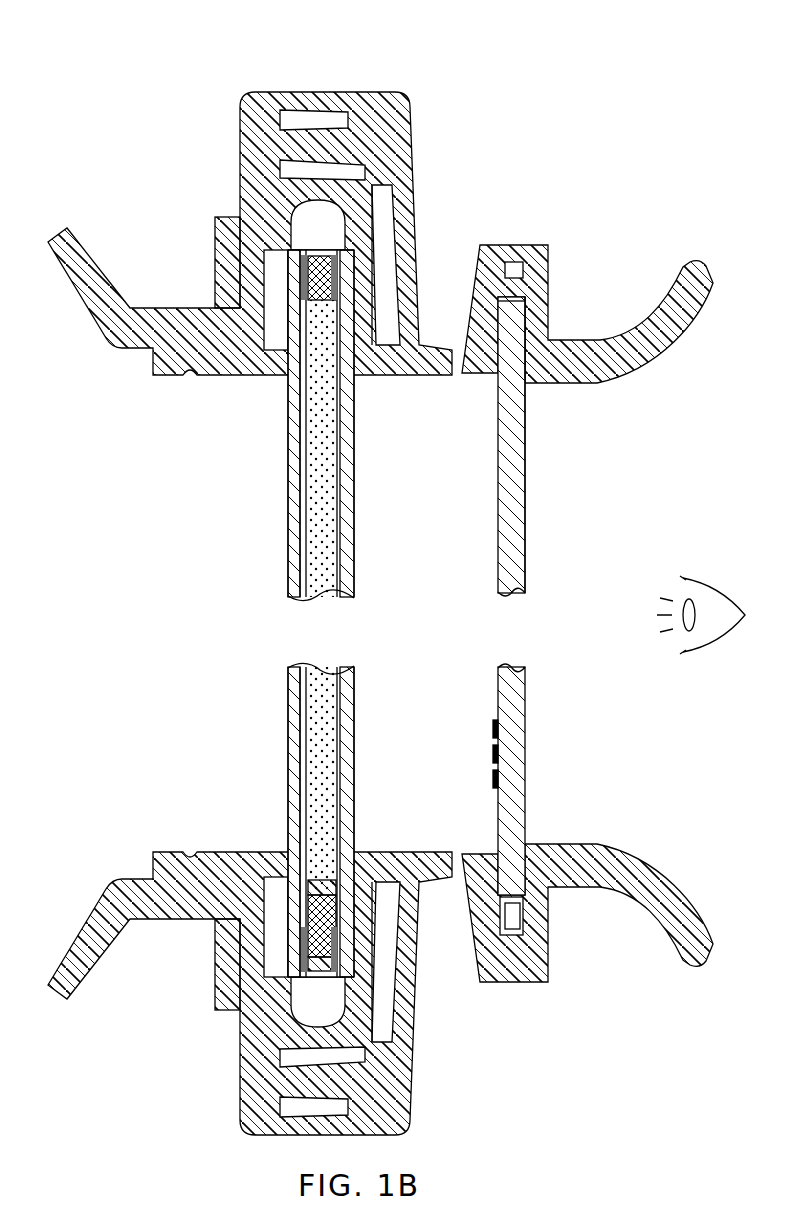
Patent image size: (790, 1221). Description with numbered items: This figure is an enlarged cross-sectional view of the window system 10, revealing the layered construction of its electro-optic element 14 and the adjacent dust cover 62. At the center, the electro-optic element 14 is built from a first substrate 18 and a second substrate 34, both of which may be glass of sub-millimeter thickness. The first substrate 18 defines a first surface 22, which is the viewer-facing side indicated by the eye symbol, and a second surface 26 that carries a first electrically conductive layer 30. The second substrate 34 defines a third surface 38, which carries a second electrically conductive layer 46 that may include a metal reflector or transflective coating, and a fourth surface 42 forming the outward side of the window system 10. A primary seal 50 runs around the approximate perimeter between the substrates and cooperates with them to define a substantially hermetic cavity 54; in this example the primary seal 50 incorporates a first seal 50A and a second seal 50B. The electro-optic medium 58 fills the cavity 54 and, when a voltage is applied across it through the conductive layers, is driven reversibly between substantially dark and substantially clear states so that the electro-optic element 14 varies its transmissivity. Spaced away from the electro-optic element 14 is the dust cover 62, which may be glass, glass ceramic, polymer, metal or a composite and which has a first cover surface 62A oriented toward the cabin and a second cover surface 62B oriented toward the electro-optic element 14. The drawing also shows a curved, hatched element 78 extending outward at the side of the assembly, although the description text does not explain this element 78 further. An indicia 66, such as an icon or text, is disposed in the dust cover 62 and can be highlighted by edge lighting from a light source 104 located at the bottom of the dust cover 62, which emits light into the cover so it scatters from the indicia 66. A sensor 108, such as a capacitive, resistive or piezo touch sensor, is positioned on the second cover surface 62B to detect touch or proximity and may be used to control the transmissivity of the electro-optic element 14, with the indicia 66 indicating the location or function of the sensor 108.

The window system 10 is at (84, 136).
The electro-optic element 14 is at (233, 609).
The first substantially transparent substrate 18 is at (350, 477).
The first surface 22 is at (354, 528).
The second surface 26 is at (340, 553).
The first electrically conductive layer 30 is at (345, 718).
The second substantially transparent substrate 34 is at (293, 497).
The third surface 38 is at (300, 450).
The fourth surface 42 is at (288, 537).
The second electrically conductive layer 46 is at (300, 712).
The primary seal 50 is at (352, 382).
The first seal 50A is at (318, 880).
The second seal 50B is at (335, 957).
The cavity 54 is at (318, 558).
The electro-optic medium 58 is at (318, 670).
The dust cover 62 is at (515, 455).
The first cover surface 62A is at (525, 543).
The second cover surface 62B is at (497, 578).
The indicia 66 is at (529, 685).
The flange 78 is at (655, 333).
The light source 104 is at (512, 914).
The sensor 108 is at (493, 779).